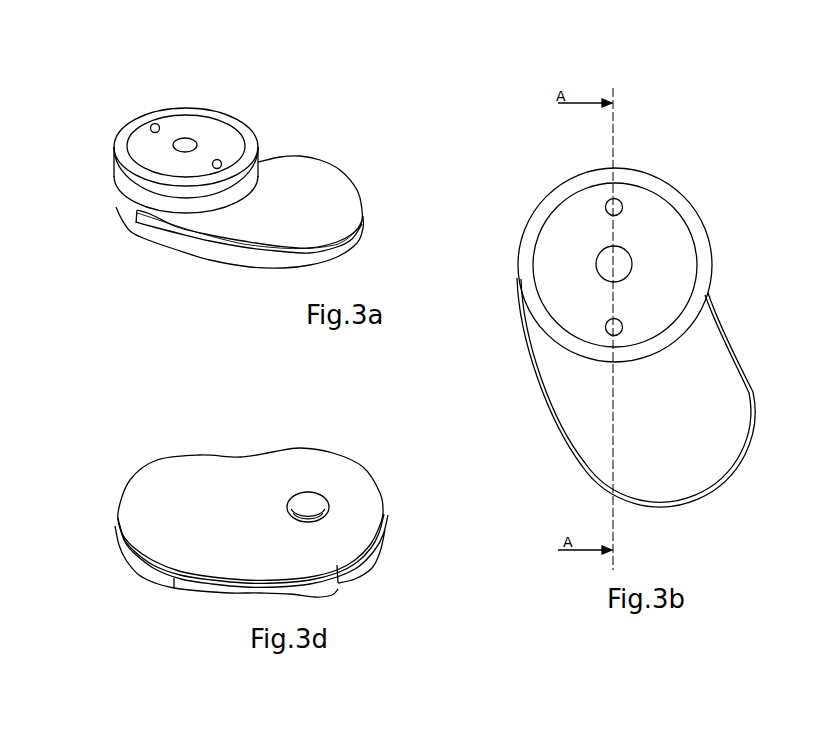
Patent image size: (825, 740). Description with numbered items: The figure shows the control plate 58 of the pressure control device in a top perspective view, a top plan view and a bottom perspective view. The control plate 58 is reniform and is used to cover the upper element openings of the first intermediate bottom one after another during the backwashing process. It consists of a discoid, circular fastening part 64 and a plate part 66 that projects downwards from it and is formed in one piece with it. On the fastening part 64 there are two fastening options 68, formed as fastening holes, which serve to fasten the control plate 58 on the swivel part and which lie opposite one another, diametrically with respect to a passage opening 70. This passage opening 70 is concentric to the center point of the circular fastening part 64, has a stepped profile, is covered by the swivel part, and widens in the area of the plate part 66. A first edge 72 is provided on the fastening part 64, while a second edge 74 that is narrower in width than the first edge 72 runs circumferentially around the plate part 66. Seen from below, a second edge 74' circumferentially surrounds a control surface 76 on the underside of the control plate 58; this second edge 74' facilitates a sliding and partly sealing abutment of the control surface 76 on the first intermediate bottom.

In FIG. 3A, the control plate 58 is at (342, 157).
In FIG. 3B, the control plate 58 is at (672, 147).
In FIG. 3D, the control plate 58 is at (360, 448).
In FIG. 3A, the fastening part 64 is at (190, 123).
In FIG. 3B, the fastening part 64 is at (655, 217).
In FIG. 3D, the fastening part 64 is at (347, 581).
In FIG. 3A, the plate part 66 is at (263, 218).
In FIG. 3B, the plate part 66 is at (725, 402).
In FIG. 3D, the plate part 66 is at (199, 586).
In FIG. 3A, the fastening options 68 is at (155, 124).
In FIG. 3B, the fastening options 68 is at (619, 206).
In FIG. 3A, the passage opening 70 is at (190, 140).
In FIG. 3B, the passage opening 70 is at (628, 260).
In FIG. 3D, the passage opening 70 is at (307, 500).
In FIG. 3A, the first edge 72 is at (116, 150).
In FIG. 3B, the first edge 72 is at (700, 245).
In FIG. 3A, the second edge 74 is at (249, 266).
In FIG. 3B, the second edge 74 is at (535, 467).
In FIG. 3D, the second edge 74 is at (253, 550).
In FIG. 3D, the second edge 74' is at (429, 491).
In FIG. 3B, the control surface 76 is at (818, 402).
In FIG. 3D, the control surface 76 is at (235, 522).